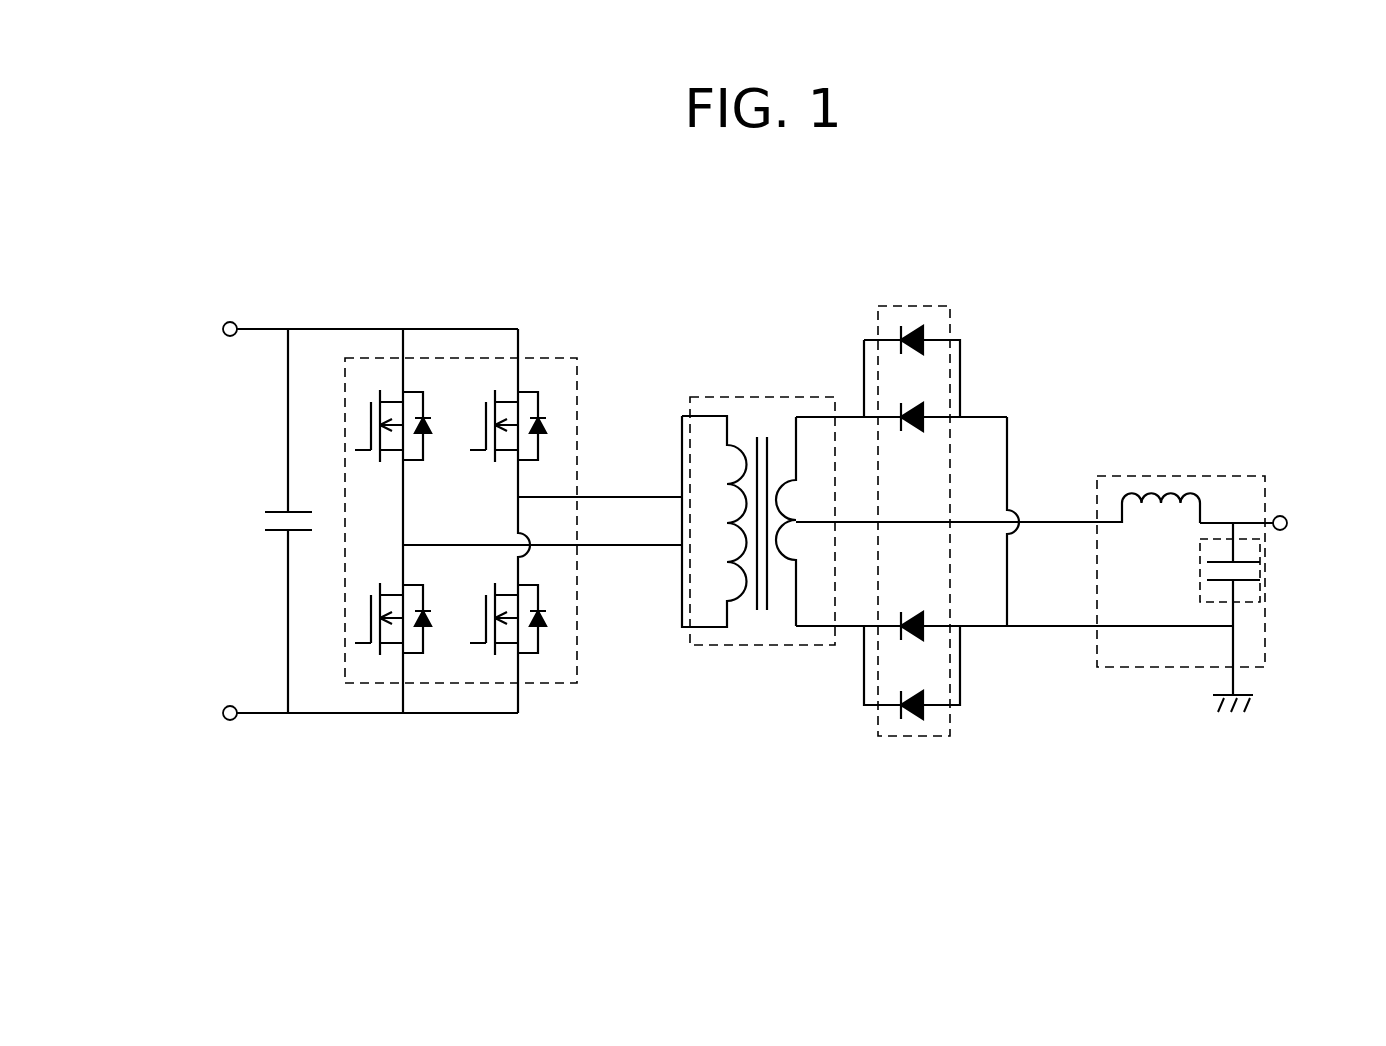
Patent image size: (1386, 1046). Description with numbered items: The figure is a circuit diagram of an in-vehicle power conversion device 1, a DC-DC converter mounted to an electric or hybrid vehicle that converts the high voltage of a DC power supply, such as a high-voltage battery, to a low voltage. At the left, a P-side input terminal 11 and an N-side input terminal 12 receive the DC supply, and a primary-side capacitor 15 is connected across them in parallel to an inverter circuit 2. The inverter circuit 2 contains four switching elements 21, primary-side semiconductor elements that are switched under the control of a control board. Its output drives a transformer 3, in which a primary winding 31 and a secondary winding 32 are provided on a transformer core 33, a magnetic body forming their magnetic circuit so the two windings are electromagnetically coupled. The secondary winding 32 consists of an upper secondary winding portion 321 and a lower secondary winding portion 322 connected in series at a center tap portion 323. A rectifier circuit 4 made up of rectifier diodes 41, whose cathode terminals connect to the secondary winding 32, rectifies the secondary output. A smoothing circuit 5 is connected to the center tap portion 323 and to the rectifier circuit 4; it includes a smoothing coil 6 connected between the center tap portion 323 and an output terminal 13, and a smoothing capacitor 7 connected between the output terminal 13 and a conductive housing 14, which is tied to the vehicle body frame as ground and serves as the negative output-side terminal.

The in-vehicle power conversion device 1 is at (255, 178).
The inverter circuit 2 is at (485, 358).
The switching element 21 is at (392, 386).
The transformer 3 is at (762, 395).
The primary winding 31 is at (737, 603).
The secondary winding 32 is at (780, 580).
The upper secondary winding portion 321 is at (779, 482).
The lower secondary winding portion 322 is at (786, 600).
The center tap portion 323 is at (794, 519).
The transformer core 33 is at (757, 433).
The rectifier circuit 4 is at (938, 308).
The rectifier diode 41 is at (905, 328).
The smoothing circuit 5 is at (1206, 476).
The smoothing coil 6 is at (1150, 497).
The smoothing capacitor 7 is at (1262, 552).
The P-side input terminal 11 is at (224, 323).
The N-side input terminal 12 is at (226, 707).
The output terminal 13 is at (1287, 518).
The housing 14 is at (1222, 703).
The primary-side capacitor 15 is at (280, 511).